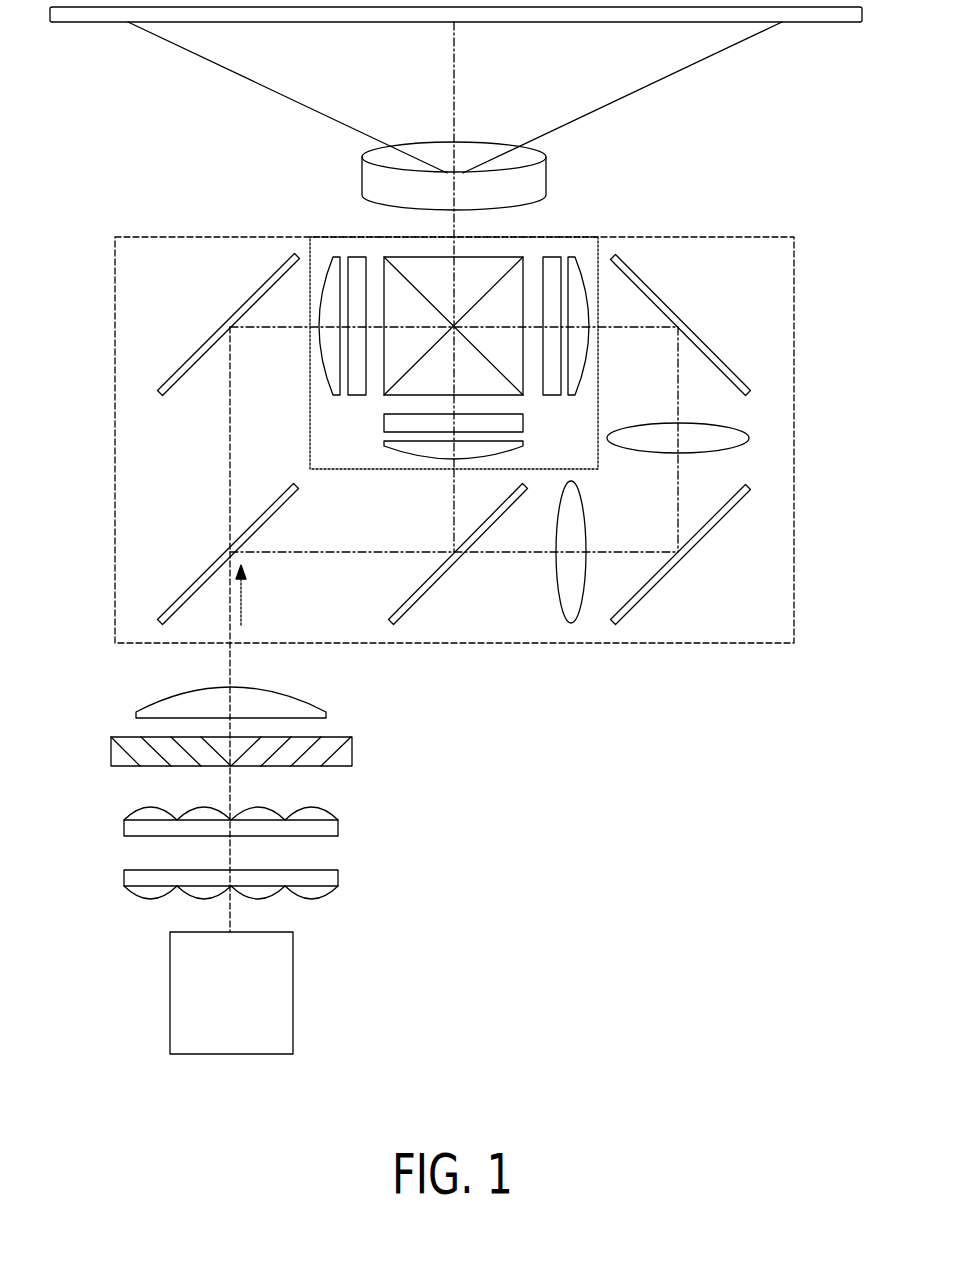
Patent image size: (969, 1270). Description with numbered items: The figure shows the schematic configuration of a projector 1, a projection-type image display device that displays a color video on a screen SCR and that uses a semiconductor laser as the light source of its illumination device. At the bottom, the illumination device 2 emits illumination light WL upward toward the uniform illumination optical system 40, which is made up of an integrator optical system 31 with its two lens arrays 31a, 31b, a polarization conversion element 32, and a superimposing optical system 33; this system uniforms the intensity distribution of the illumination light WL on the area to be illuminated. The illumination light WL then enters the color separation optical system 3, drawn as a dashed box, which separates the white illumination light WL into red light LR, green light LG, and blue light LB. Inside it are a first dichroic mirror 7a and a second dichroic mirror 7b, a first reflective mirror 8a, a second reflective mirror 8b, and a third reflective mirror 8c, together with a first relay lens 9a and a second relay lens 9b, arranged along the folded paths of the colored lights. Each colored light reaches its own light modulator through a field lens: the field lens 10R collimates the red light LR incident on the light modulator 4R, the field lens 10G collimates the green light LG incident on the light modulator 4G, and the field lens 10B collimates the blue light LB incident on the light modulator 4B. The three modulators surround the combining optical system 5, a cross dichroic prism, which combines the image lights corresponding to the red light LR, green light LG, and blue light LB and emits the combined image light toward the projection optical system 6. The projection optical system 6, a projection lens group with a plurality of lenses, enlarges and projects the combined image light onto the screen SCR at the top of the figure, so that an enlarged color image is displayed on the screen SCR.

The projector 1 is at (812, 202).
The screen SCR is at (825, 22).
The projection optical system 6 is at (435, 150).
The color separation optical system 3 is at (115, 381).
The combining optical system 5 is at (478, 268).
The light modulator 4R is at (360, 253).
The light modulator 4G is at (390, 424).
The light modulator 4B is at (550, 253).
The field lens 10R is at (336, 257).
The field lens 10G is at (390, 447).
The field lens 10B is at (567, 257).
The first dichroic mirror 7a is at (193, 587).
The second dichroic mirror 7b is at (430, 585).
The first reflective mirror 8a is at (203, 345).
The second reflective mirror 8b is at (705, 537).
The third reflective mirror 8c is at (708, 343).
The first relay lens 9a is at (555, 573).
The second relay lens 9b is at (733, 427).
The red light LR is at (230, 462).
The green light LG is at (450, 505).
The blue light LB is at (675, 498).
The illumination light WL is at (243, 603).
The uniform illumination optical system 40 is at (319, 787).
The superimposing optical system 33 is at (313, 700).
The polarization conversion element 32 is at (353, 748).
The integrator optical system 31 is at (300, 853).
The first lens array 31a is at (338, 875).
The second lens array 31b is at (338, 825).
The illumination device 2 is at (294, 990).